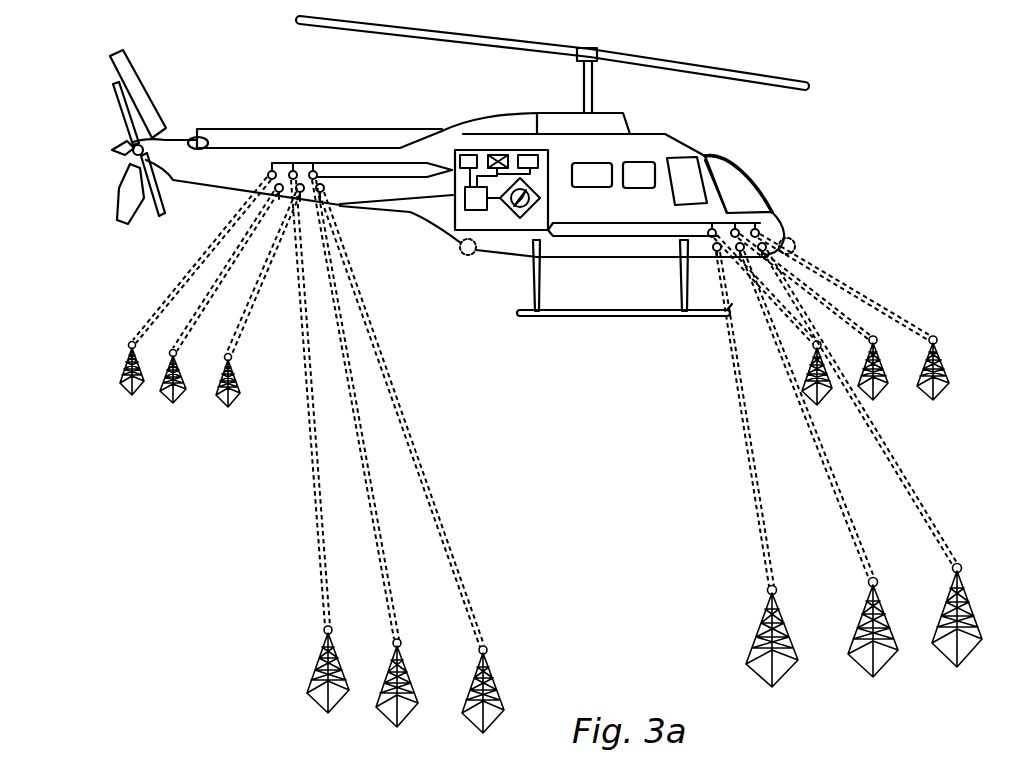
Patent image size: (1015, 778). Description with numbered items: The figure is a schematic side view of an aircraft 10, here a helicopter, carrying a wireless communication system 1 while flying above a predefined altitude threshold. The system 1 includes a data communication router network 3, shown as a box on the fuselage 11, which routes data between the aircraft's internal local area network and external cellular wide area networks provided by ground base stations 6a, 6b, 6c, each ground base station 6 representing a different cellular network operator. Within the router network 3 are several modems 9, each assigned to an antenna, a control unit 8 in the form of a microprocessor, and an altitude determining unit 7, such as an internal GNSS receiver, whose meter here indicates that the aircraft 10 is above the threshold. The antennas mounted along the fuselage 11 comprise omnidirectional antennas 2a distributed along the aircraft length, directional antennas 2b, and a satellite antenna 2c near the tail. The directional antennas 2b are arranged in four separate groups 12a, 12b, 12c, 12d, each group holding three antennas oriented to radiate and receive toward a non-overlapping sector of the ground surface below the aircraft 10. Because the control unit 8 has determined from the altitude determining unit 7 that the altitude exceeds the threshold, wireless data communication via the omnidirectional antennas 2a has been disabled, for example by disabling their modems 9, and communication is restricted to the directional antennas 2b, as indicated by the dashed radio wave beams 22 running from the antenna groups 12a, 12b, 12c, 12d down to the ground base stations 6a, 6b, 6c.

The wireless communication system 1 is at (441, 96).
The omnidirectional antenna 2a is at (342, 207).
The directional antenna 2b is at (294, 170).
The satellite antenna 2c is at (196, 140).
The data communication router network 3 is at (540, 234).
The ground base station 6 is at (532, 557).
The ground base station 6a is at (125, 388).
The ground base station 6b is at (172, 402).
The ground base station 6c is at (226, 405).
The altitude determining unit 7 is at (524, 212).
The control unit 8 is at (463, 205).
The modem 9 is at (526, 155).
The aircraft 10 is at (870, 75).
The fuselage 11 is at (687, 143).
The group of directional antennas 12a is at (735, 183).
The group of directional antennas 12b is at (655, 238).
The group of directional antennas 12c is at (365, 175).
The group of directional antennas 12d is at (334, 162).
The radio wave beams 22 is at (147, 293).